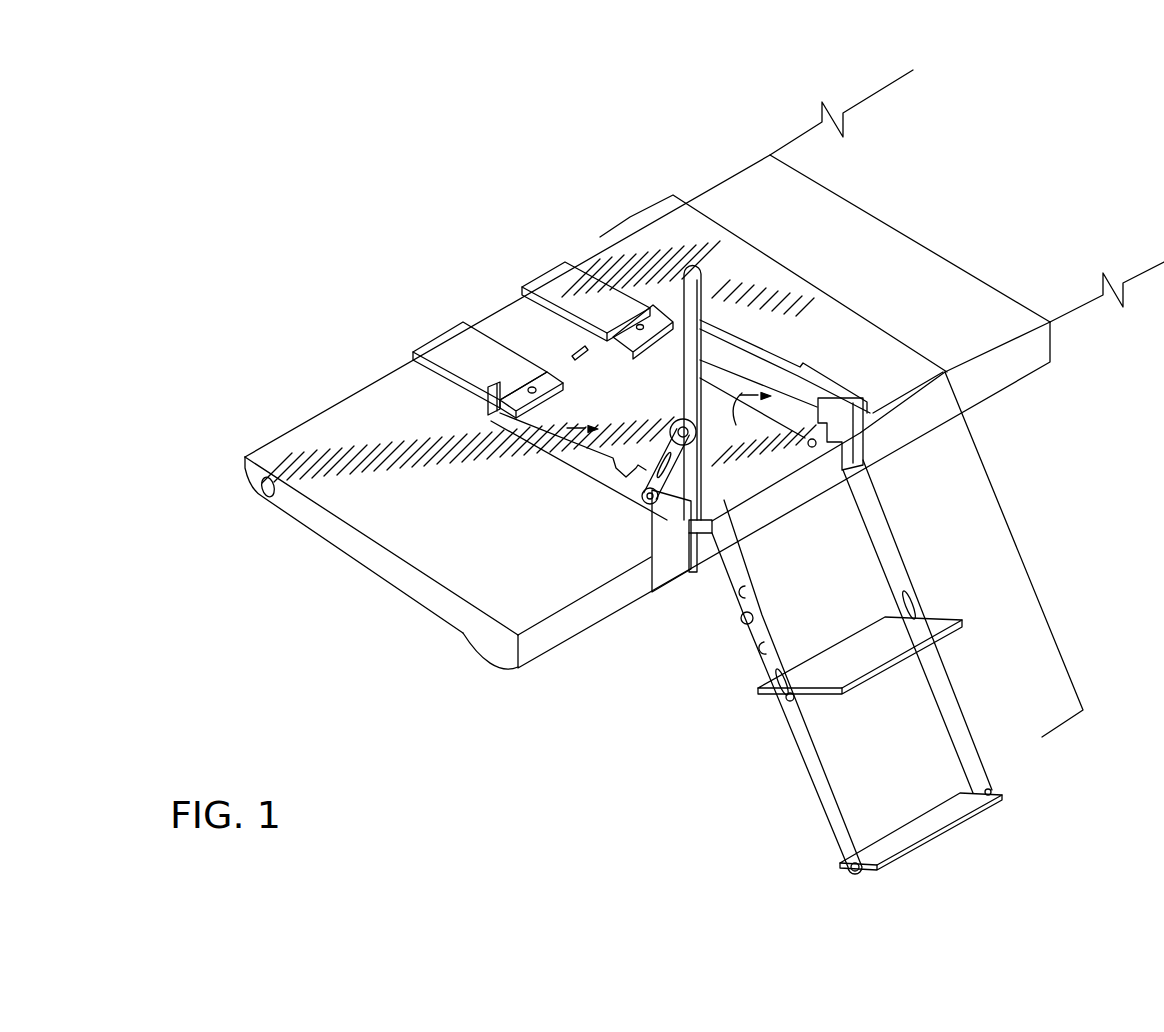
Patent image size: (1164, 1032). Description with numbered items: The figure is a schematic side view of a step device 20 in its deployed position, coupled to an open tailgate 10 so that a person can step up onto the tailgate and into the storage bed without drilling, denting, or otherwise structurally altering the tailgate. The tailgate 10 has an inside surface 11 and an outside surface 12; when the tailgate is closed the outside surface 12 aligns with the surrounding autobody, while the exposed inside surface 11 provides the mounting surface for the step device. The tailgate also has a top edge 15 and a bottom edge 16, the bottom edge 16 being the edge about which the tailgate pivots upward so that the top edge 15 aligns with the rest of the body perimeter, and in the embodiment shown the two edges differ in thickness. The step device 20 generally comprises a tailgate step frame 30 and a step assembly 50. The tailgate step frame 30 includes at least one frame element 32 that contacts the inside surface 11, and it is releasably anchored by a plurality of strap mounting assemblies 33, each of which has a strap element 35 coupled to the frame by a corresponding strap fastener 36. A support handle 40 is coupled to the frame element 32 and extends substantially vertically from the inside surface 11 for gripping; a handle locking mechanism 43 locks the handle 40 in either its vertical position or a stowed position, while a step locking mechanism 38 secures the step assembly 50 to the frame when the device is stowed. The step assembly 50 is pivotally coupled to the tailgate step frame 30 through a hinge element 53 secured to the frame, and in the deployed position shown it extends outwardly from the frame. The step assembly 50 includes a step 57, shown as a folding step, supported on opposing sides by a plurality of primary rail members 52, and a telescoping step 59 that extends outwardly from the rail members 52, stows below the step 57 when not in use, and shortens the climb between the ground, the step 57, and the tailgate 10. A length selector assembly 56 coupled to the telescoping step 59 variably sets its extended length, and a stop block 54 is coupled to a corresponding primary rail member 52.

The tailgate 10 is at (284, 305).
The inside surface 11 is at (296, 440).
The outside surface 12 is at (388, 582).
The top edge 15 is at (497, 648).
The bottom edge 16 is at (248, 470).
The step device 20 is at (573, 597).
The tailgate step frame 30 is at (808, 285).
The frame element 32 is at (773, 456).
The strap mounting assembly 33 is at (435, 345).
The strap element 35 is at (552, 292).
The strap fastener 36 is at (647, 320).
The step locking mechanism 38 is at (578, 350).
The support handle 40 is at (712, 291).
The handle locking mechanism 43 is at (682, 509).
The step assembly 50 is at (1012, 533).
The primary rail member 52 is at (926, 551).
The hinge element 53 is at (687, 505).
The stop block 54 is at (712, 533).
The length selector assembly 56 is at (770, 609).
The step 57 is at (935, 627).
The telescoping step 59 is at (827, 793).